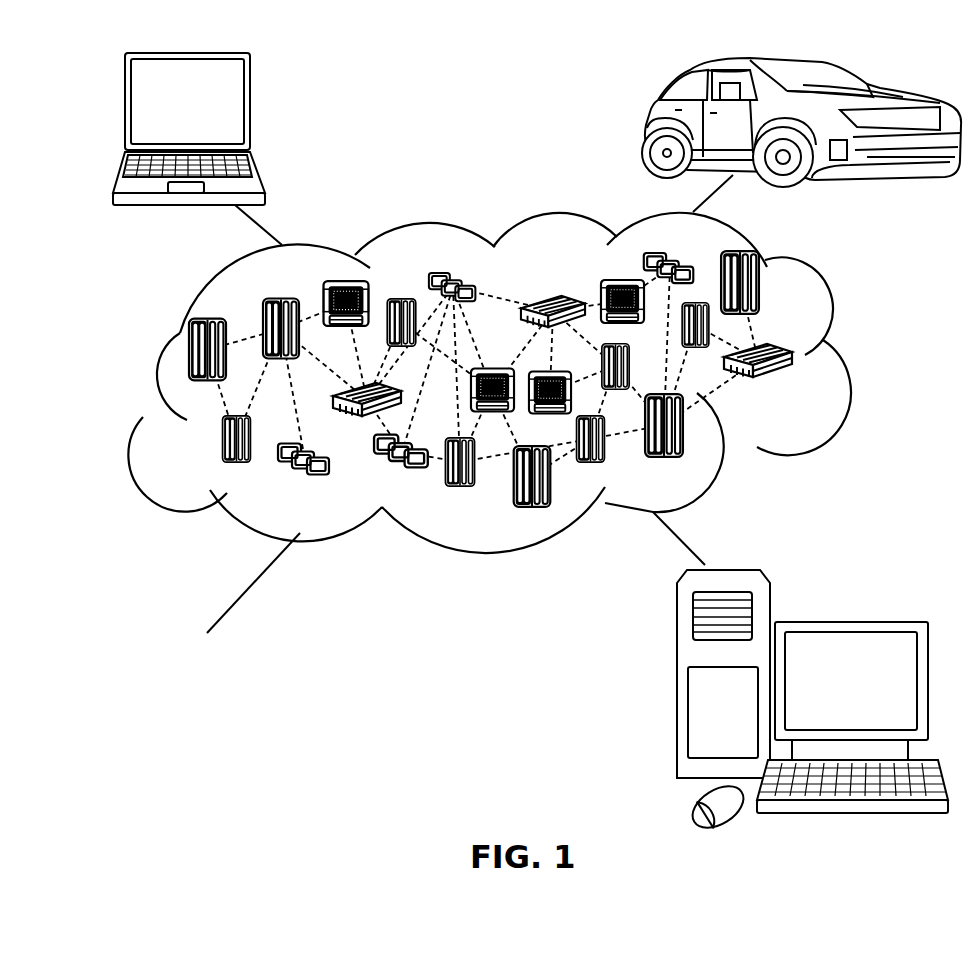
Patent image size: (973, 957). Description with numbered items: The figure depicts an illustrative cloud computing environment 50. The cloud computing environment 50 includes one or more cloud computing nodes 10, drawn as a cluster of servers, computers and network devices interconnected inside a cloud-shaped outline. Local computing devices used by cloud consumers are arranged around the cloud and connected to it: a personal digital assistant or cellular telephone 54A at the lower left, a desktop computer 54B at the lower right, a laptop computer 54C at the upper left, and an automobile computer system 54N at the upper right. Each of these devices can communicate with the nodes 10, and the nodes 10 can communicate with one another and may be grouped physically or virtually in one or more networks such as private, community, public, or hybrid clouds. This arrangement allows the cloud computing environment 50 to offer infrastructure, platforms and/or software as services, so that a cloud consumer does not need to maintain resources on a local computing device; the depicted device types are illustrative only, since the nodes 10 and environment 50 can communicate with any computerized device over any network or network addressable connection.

The cloud computing node 10 is at (538, 379).
The cloud computing environment 50 is at (847, 357).
The personal digital assistant or cellular telephone 54A is at (243, 708).
The desktop computer 54B is at (848, 622).
The laptop computer 54C is at (252, 108).
The automobile computer system 54N is at (650, 124).